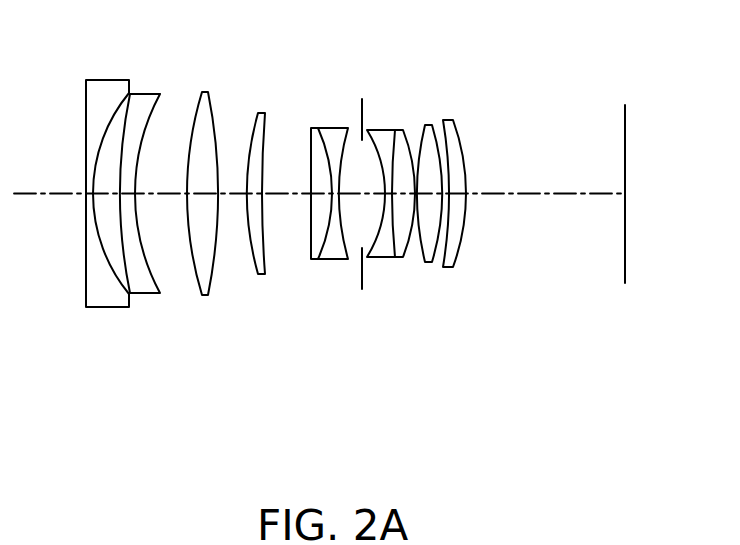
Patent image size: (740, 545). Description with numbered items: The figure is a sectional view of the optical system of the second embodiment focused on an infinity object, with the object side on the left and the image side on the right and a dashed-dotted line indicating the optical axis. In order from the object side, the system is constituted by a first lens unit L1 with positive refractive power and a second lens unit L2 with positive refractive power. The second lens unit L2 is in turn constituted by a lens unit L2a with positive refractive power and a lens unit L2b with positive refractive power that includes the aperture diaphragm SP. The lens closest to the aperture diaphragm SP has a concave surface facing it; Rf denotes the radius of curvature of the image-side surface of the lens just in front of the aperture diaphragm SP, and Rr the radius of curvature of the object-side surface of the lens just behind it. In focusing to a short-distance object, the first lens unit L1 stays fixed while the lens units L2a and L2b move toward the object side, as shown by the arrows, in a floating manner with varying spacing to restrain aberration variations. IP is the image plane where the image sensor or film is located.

The first lens unit L1 is at (247, 418).
The second lens unit L2 is at (376, 258).
The lens unit L2a is at (297, 229).
The lens unit L2b is at (422, 229).
The radius of curvature of image-side surface Rf is at (332, 131).
The radius of curvature of object-side surface Rr is at (398, 131).
The aperture diaphragm SP is at (363, 118).
The image plane IP is at (625, 138).